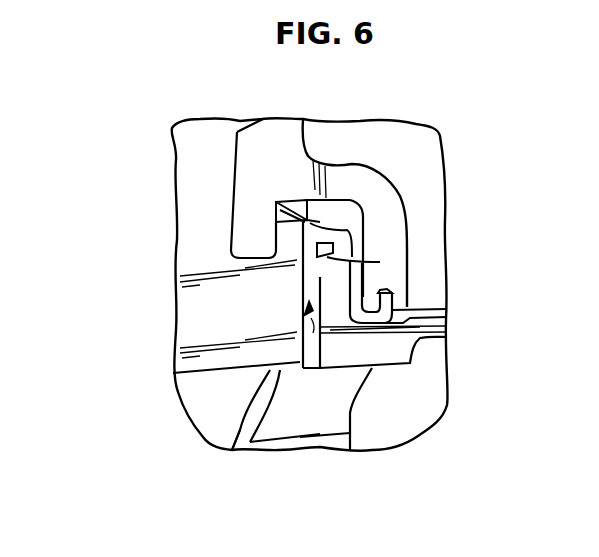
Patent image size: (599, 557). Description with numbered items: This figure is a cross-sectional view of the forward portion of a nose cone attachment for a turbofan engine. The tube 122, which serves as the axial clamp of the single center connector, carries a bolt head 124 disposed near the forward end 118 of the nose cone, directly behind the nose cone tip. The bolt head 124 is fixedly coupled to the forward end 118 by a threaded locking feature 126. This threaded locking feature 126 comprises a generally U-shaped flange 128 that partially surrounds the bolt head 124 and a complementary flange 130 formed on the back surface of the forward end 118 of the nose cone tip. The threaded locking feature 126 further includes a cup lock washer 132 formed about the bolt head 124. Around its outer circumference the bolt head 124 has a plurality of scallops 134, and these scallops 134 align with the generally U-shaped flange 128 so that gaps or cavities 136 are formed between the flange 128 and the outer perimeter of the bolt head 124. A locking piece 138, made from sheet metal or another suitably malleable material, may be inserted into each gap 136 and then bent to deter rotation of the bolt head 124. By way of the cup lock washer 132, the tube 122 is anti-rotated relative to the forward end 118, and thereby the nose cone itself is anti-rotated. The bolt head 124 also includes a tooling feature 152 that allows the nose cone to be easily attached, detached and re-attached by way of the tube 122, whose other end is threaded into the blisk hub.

The forward end 118 is at (158, 160).
The tube 122 is at (420, 413).
The bolt head 124 is at (233, 407).
The threaded locking feature 126 is at (158, 292).
The generally U-shaped flange 128 is at (383, 150).
The complementary flange 130 is at (296, 197).
The cup lock washer 132 is at (360, 290).
The scallops 134 is at (320, 336).
The gaps or cavities 136 is at (345, 232).
The locking piece 138 is at (335, 258).
The tooling feature 152 is at (270, 423).